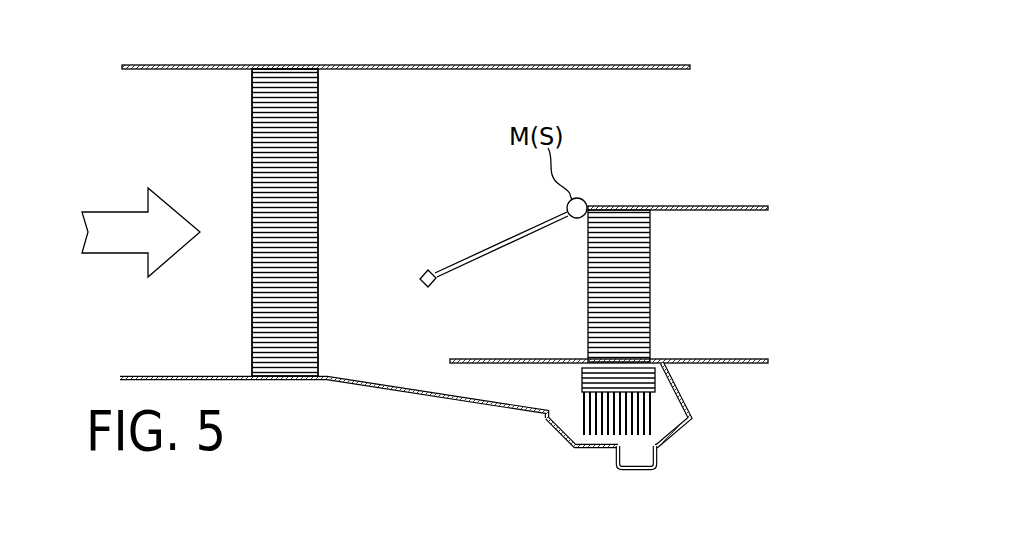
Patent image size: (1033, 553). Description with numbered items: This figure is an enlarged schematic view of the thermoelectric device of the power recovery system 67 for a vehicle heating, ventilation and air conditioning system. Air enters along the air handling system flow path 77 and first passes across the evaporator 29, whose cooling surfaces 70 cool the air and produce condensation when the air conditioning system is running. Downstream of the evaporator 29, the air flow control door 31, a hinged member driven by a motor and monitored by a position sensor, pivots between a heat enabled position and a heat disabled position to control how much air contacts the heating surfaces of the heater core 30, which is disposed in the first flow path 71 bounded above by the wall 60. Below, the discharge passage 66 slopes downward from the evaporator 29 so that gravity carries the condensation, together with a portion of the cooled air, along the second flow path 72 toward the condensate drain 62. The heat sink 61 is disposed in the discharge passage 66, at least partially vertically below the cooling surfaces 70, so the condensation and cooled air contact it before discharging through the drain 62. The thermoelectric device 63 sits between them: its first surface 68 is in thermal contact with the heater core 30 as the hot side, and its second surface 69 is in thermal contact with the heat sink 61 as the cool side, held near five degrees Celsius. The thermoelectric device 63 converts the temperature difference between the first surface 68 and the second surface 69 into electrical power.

The air handling system flow path 77 is at (182, 110).
The evaporator 29 is at (252, 150).
The cooling surfaces 70 is at (252, 300).
The air flow control door 31 is at (470, 252).
The upper wall of bypass channel 60 is at (700, 206).
The heater core 30 is at (651, 245).
The second flow path 72 is at (462, 381).
The first flow path 71 is at (475, 313).
The power recovery system 67 is at (467, 438).
The discharge passage 66 is at (511, 410).
The first surface 68 is at (653, 362).
The condensate drain 62 is at (656, 460).
The thermoelectric device 63 is at (656, 378).
The heat sink 61 is at (656, 402).
The second surface 69 is at (598, 393).